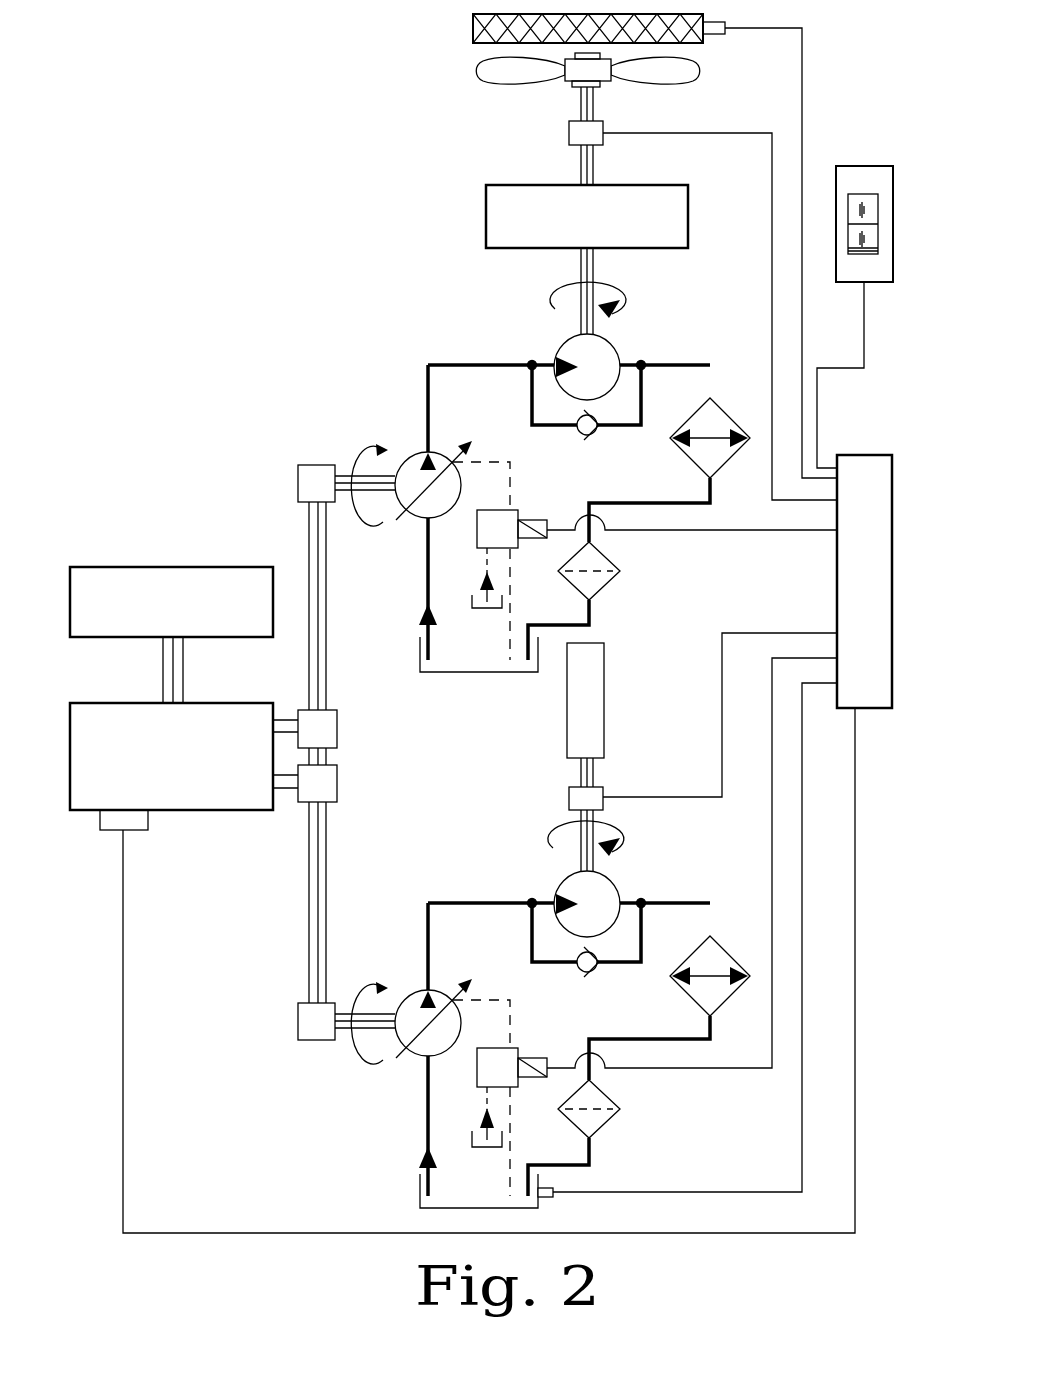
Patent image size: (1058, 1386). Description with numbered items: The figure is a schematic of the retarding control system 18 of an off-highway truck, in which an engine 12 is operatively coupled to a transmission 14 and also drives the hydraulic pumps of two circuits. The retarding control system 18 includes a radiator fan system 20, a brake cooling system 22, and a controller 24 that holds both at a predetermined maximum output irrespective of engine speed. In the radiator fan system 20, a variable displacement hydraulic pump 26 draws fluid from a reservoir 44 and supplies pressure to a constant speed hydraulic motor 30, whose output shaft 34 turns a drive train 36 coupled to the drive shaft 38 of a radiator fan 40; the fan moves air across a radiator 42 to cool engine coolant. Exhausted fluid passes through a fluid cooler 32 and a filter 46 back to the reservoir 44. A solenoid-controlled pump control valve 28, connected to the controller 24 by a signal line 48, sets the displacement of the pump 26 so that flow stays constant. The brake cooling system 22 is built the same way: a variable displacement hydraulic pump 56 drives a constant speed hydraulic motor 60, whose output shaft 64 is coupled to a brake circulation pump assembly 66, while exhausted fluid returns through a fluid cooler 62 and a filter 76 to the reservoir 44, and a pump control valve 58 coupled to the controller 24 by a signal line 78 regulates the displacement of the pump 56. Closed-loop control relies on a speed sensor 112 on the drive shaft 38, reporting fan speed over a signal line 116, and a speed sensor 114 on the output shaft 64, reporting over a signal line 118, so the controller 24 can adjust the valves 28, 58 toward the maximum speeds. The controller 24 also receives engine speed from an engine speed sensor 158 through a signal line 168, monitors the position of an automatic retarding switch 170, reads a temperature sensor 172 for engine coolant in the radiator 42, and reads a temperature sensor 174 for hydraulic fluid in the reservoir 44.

The engine 12 is at (104, 712).
The transmission 14 is at (100, 573).
The retarding control system 18 is at (818, 26).
The radiator fan system 20 is at (420, 357).
The brake cooling system 22 is at (483, 830).
The controller 24 is at (864, 462).
The variable displacement hydraulic pump 26 is at (414, 461).
The pump control valve 28 is at (508, 519).
The constant speed hydraulic motor 30 is at (606, 345).
The fluid cooler 32 is at (711, 418).
The output shaft 34 is at (580, 262).
The drive train 36 is at (486, 212).
The drive shaft 38 is at (594, 104).
The radiator fan 40 is at (480, 70).
The radiator 42 is at (473, 24).
The reservoir 44 is at (420, 656).
The filter 46 is at (600, 586).
The signal line 48 is at (712, 533).
The variable displacement hydraulic pump 56 is at (416, 1052).
The pump control valve 58 is at (508, 1057).
The constant speed hydraulic motor 60 is at (606, 888).
The fluid cooler 62 is at (711, 956).
The output shaft 64 is at (594, 770).
The brake circulation pump assembly 66 is at (596, 706).
The filter 76 is at (600, 1122).
The signal line 78 is at (724, 1075).
The speed sensor 112 is at (569, 133).
The speed sensor 114 is at (569, 800).
The signal line 116 is at (772, 300).
The signal line 118 is at (698, 800).
The engine speed sensor 158 is at (140, 822).
The signal line 168 is at (210, 1232).
The automatic retarding switch 170 is at (870, 176).
The temperature sensor 172 is at (714, 36).
The temperature sensor 174 is at (556, 1196).